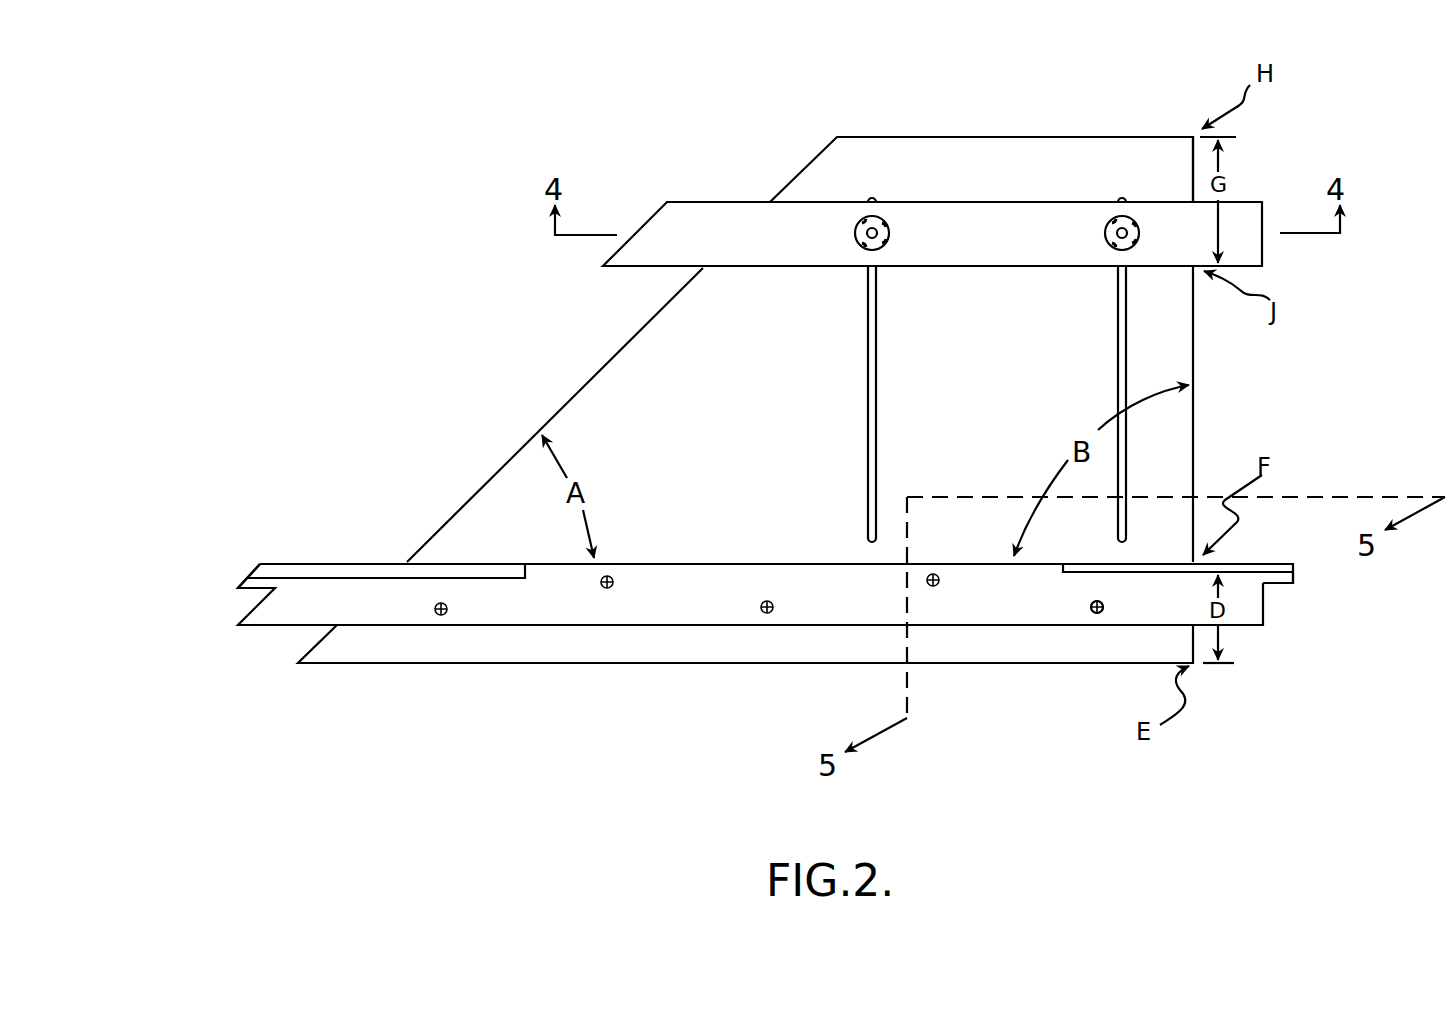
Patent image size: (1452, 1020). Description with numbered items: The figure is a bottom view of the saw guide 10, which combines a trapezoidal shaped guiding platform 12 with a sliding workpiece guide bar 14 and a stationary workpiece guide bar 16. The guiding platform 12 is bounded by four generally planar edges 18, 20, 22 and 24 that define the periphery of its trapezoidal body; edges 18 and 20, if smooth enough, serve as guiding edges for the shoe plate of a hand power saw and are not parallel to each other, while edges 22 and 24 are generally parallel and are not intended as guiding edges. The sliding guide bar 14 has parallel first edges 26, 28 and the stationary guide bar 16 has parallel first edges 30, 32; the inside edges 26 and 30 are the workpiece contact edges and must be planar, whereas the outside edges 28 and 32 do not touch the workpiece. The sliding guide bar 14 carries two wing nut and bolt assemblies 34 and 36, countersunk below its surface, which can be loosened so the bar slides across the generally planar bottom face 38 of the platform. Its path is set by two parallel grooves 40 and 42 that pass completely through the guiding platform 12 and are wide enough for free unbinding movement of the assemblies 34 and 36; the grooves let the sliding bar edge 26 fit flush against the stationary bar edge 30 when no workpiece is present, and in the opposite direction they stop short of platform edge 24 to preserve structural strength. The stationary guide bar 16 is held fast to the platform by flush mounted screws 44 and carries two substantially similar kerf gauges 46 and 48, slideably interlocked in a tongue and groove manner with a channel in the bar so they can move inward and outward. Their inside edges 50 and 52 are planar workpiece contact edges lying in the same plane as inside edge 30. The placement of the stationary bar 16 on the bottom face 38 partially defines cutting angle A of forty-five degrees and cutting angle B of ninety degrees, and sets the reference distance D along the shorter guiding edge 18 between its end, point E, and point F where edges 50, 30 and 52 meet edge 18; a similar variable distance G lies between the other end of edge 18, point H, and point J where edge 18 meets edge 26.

The saw guide 10 is at (982, 82).
The guiding platform 12 is at (1092, 152).
The sliding workpiece guide bar 14 is at (932, 232).
The stationary workpiece guide bar 16 is at (750, 594).
The planar edge 18 is at (1196, 404).
The planar edge 20 is at (562, 400).
The planar edge 22 is at (672, 664).
The planar edge 24 is at (879, 137).
The inside edge 26 is at (1015, 268).
The outside edge 28 is at (1008, 200).
The inside edge 30 is at (650, 563).
The outside edge 32 is at (543, 626).
The wing nut and bolt assembly 34 is at (848, 239).
The wing nut and bolt assembly 36 is at (1148, 246).
The bottom face 38 is at (722, 431).
The groove 40 is at (877, 388).
The groove 42 is at (1120, 383).
The screws 44 is at (1097, 614).
The kerf gauge 46 is at (234, 573).
The kerf gauge 48 is at (1304, 572).
The inside edge 50 is at (340, 564).
The inside edge 52 is at (1252, 564).